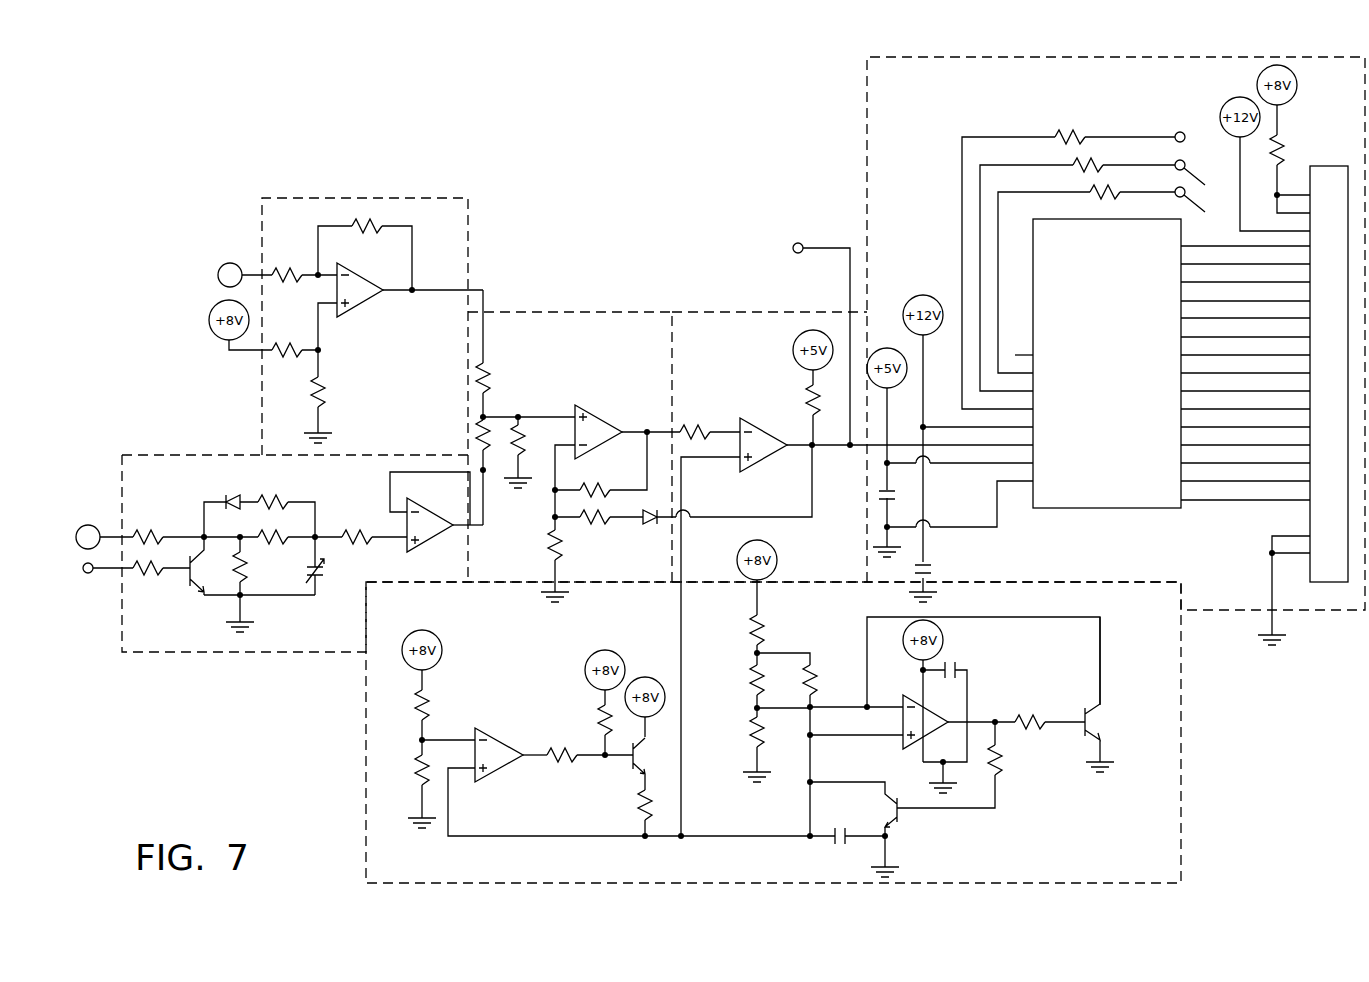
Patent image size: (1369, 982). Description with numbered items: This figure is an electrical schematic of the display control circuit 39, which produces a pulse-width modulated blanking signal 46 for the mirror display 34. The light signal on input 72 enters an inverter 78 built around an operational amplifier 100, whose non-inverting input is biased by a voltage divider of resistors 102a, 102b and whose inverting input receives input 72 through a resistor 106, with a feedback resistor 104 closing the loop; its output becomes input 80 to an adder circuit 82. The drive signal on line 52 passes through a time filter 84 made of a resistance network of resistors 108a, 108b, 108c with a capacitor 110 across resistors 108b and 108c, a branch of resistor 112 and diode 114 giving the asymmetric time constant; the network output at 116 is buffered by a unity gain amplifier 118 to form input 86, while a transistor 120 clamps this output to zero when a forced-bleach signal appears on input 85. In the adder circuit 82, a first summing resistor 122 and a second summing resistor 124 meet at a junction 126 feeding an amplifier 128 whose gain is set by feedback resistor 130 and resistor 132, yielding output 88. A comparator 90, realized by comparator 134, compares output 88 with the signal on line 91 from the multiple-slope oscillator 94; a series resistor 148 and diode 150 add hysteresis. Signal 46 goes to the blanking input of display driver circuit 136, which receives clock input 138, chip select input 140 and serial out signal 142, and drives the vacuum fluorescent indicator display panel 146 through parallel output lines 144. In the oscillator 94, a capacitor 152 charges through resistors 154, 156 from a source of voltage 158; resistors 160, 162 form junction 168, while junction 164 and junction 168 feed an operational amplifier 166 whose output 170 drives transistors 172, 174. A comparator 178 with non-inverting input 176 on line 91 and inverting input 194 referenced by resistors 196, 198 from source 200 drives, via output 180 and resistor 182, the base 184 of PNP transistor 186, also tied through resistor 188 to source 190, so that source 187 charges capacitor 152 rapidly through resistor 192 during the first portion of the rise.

The mirror display 34 is at (865, 112).
The display control circuit 39 is at (690, 189).
The pulse-width modulated blanking signal 46 is at (828, 246).
The drive signal line 52 is at (88, 524).
The input 72 is at (230, 262).
The inverter 78 is at (438, 198).
The input 80 is at (485, 296).
The adder circuit 82 is at (566, 312).
The time filter 84 is at (183, 453).
The forced-bleach input 85 is at (88, 575).
The input 86 is at (488, 505).
The output 88 is at (635, 430).
The comparator 90 is at (700, 312).
The line 91 is at (681, 618).
The multiple-slope oscillator 94 is at (365, 796).
The operational amplifier 100 is at (365, 303).
The resistor 102a is at (280, 348).
The resistor 102b is at (325, 388).
The feedback resistor 104 is at (376, 222).
The resistor 106 is at (283, 268).
The resistor 108a is at (145, 530).
The resistor 108b is at (248, 573).
The resistor 108c is at (280, 530).
The capacitor 110 is at (318, 578).
The resistor 112 is at (275, 503).
The diode 114 is at (238, 500).
The output of the resistance network 116 is at (320, 535).
The unity gain amplifier 118 is at (440, 520).
The transistor 120 is at (190, 575).
The first summing resistor 122 is at (488, 375).
The second summing resistor 124 is at (470, 448).
The junction 126 is at (485, 415).
The amplifier 128 is at (597, 415).
The feedback resistor 130 is at (585, 492).
The resistor 132 is at (558, 552).
The comparator 134 is at (770, 435).
The display driver circuit 136 is at (1068, 509).
The clock input 138 is at (1119, 279).
The chip select input 140 is at (1110, 274).
The serial out signal 142 is at (1178, 132).
The parallel output lines 144 is at (1259, 510).
The vacuum fluorescent indicator display panel 146 is at (1325, 166).
The series resistor 148 is at (608, 517).
The diode 150 is at (650, 525).
The capacitor 152 is at (830, 843).
The resistor 154 is at (815, 680).
The resistor 156 is at (765, 625).
The source of voltage 158 is at (775, 550).
The resistor 160 is at (755, 688).
The resistor 162 is at (752, 738).
The junction 164 is at (812, 738).
The operational amplifier 166 is at (935, 712).
The junction 168 is at (755, 708).
The output 170 is at (1003, 720).
The transistor 172 is at (895, 810).
The transistor 174 is at (1095, 724).
The non-inverting input 176 is at (450, 800).
The comparator 178 is at (498, 737).
The output 180 is at (545, 758).
The resistor 182 is at (572, 752).
The base 184 is at (615, 760).
The PNP transistor 186 is at (642, 757).
The source 187 is at (645, 678).
The resistor 188 is at (598, 720).
The source of voltage 190 is at (607, 652).
The resistor 192 is at (655, 795).
The inverting input 194 is at (450, 738).
The resistor 196 is at (408, 708).
The resistor 198 is at (410, 770).
The source of voltage 200 is at (432, 636).